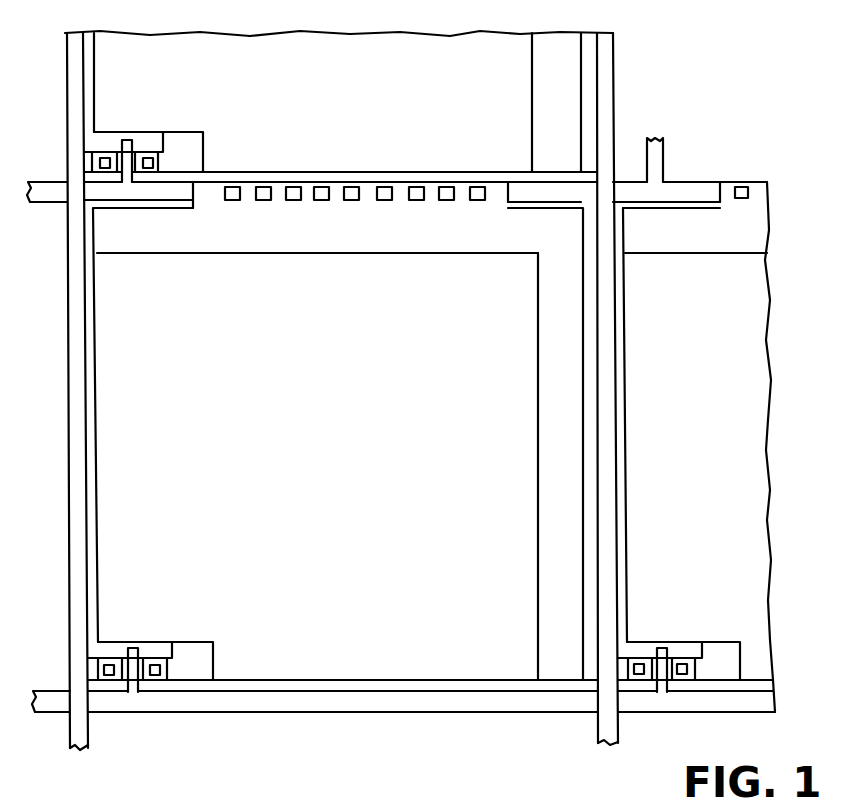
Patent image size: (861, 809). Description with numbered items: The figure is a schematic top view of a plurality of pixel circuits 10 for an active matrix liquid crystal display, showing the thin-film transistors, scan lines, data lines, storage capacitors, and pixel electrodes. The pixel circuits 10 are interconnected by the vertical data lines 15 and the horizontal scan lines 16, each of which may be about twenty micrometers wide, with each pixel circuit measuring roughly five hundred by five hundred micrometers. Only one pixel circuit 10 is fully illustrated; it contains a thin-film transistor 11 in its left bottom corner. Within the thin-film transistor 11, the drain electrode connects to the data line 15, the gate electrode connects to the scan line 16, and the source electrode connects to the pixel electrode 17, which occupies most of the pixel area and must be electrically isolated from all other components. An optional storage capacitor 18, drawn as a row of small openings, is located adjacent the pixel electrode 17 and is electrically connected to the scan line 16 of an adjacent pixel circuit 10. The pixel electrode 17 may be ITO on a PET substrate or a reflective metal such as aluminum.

The pixel circuit 10 is at (52, 312).
The thin-film transistor 11 is at (150, 117).
The data line 15 is at (77, 498).
The scan line 16 is at (45, 187).
The pixel electrode 17 is at (722, 423).
The storage capacitor 18 is at (389, 242).